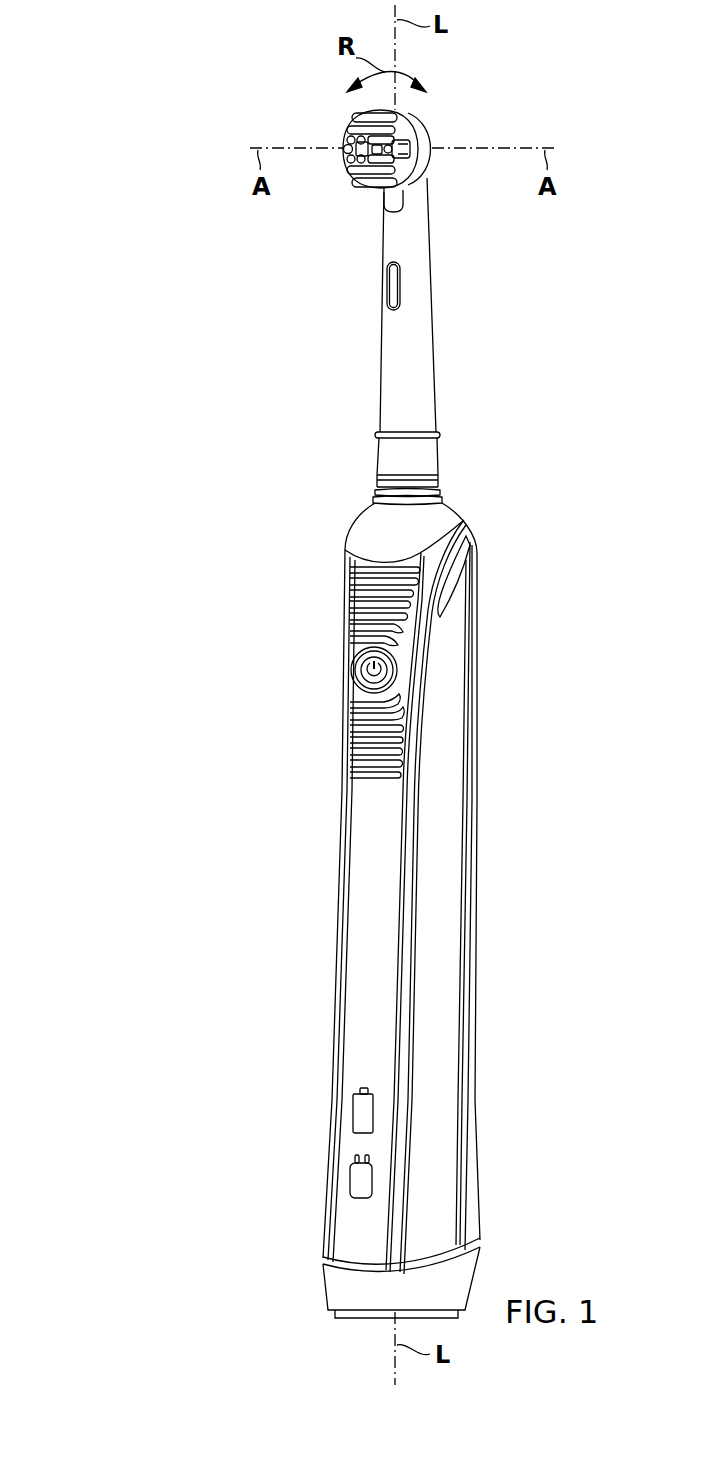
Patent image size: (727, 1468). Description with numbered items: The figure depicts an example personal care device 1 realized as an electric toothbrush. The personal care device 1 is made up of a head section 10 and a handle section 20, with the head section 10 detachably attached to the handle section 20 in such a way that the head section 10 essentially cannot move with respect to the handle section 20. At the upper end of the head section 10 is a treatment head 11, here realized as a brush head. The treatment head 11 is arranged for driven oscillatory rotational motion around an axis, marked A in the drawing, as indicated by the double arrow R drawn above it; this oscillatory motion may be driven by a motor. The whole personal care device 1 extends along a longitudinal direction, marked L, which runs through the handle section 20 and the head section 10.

The personal care device 1 is at (124, 481).
The head section 10 is at (523, 250).
The treatment head 11 is at (414, 115).
The handle section 20 is at (436, 868).